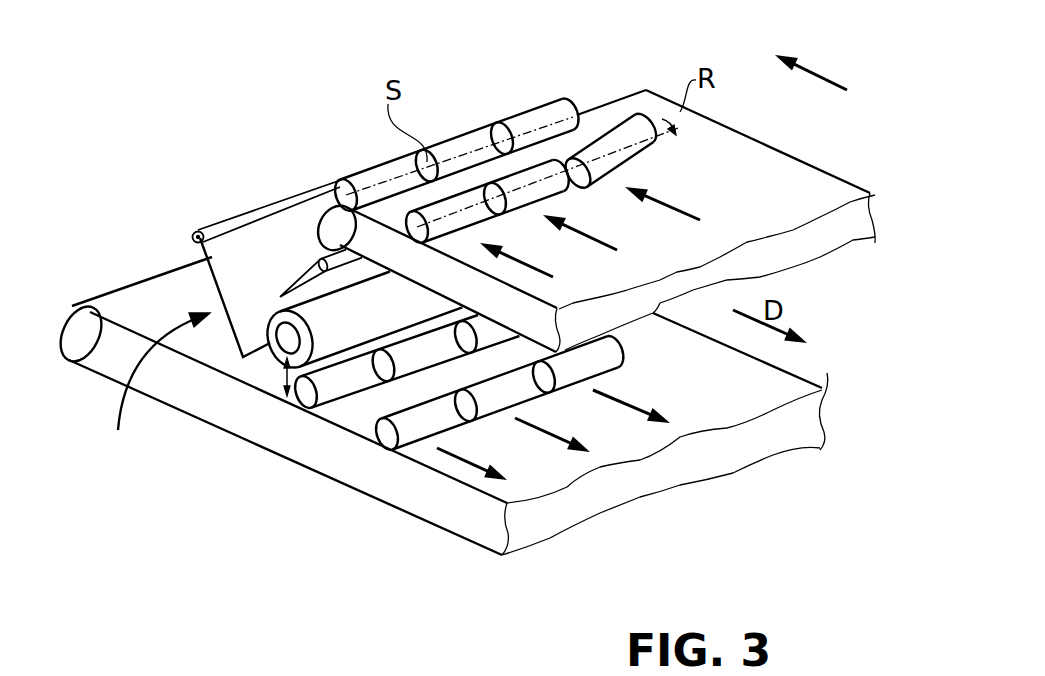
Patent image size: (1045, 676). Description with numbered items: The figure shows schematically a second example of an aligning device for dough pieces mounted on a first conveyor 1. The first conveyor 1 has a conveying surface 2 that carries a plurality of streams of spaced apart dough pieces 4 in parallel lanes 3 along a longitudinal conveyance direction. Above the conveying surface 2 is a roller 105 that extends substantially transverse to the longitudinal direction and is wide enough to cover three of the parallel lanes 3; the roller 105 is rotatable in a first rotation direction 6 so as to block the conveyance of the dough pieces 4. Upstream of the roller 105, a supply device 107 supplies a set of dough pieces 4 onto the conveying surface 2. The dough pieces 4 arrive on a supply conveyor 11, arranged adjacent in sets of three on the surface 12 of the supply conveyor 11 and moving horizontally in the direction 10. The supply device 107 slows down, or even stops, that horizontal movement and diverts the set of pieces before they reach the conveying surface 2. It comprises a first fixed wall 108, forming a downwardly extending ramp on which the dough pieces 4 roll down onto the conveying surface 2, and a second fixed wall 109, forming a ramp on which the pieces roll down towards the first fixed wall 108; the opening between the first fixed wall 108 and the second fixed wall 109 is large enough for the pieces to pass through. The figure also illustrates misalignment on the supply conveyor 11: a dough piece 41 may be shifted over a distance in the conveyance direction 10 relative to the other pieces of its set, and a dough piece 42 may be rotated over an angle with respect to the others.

The first conveyor 1 is at (382, 487).
The conveying surface 2 is at (142, 297).
The parallel lanes 3 is at (640, 413).
The dough pieces 4 is at (372, 178).
The first rotation direction 6 is at (302, 403).
The conveyance direction of the supply conveyor 10 is at (814, 64).
The supply conveyor 11 is at (808, 247).
The surface of the supply conveyor 12 is at (807, 183).
The shifted dough piece 41 is at (460, 147).
The rotated dough piece 42 is at (613, 167).
The roller 105 is at (275, 352).
The supply device 107 is at (157, 388).
The first fixed wall 108 is at (248, 250).
The second fixed wall 109 is at (278, 295).